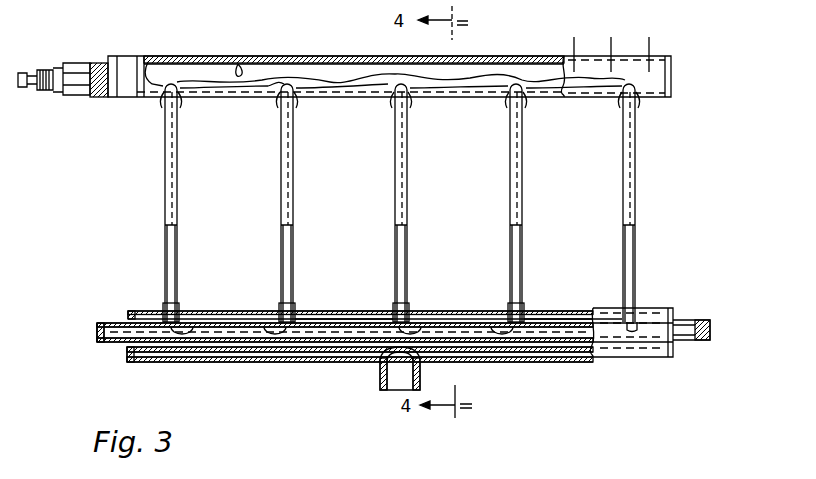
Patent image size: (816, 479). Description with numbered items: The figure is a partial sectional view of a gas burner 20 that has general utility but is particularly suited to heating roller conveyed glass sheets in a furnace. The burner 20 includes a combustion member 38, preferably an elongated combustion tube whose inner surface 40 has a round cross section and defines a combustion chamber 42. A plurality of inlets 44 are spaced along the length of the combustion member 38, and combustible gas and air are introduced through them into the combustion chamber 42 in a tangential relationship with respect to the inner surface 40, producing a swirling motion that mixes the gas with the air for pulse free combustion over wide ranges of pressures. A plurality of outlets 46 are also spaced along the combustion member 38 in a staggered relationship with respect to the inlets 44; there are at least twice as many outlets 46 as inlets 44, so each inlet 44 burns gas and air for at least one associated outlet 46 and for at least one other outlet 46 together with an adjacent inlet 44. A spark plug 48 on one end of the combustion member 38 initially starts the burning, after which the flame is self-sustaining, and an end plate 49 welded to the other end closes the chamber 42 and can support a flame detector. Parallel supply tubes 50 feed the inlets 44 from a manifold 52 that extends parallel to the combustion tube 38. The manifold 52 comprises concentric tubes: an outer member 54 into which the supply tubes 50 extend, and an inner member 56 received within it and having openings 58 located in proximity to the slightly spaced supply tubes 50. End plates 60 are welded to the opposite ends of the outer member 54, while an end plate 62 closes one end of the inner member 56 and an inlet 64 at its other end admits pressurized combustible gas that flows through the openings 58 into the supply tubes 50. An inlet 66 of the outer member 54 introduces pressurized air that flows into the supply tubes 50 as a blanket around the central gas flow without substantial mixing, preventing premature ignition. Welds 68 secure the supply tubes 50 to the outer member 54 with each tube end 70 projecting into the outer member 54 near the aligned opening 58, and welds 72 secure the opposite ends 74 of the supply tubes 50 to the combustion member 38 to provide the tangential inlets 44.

The burner 20 is at (135, 213).
The combustion member 38 is at (264, 98).
The inner surface 40 is at (246, 60).
The combustion chamber 42 is at (373, 72).
The inlet 44 is at (165, 100).
The outlet 46 is at (230, 58).
The spark plug 48 is at (78, 62).
The end plate 49 is at (673, 70).
The supply tubes 50 is at (178, 212).
The manifold 52 is at (260, 362).
The outer member 54 is at (223, 362).
The inner member 56 is at (345, 344).
The openings 58 is at (255, 325).
The end plates 60 is at (128, 312).
The end plate 62 is at (97, 337).
The inlet 64 is at (712, 330).
The inlet 66 is at (390, 385).
The welds 68 is at (394, 308).
The tube end 70 is at (182, 315).
The welds 72 is at (150, 60).
The opposite ends 74 is at (179, 102).